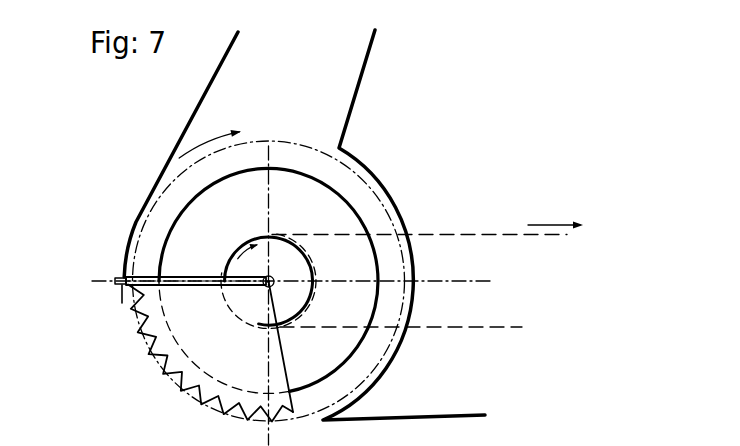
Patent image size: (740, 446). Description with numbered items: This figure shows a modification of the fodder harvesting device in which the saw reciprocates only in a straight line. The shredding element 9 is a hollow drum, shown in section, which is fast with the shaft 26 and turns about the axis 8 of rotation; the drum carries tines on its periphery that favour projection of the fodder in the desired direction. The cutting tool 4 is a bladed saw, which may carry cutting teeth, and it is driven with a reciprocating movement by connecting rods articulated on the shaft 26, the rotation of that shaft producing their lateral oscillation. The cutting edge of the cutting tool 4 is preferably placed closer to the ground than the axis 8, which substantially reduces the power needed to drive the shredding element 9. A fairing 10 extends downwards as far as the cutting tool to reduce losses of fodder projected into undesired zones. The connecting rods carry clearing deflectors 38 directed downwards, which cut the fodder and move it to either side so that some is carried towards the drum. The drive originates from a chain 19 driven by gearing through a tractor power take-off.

The fairing 10 is at (137, 226).
The shredding element 9 is at (358, 215).
The shaft 26 is at (263, 278).
The axis of rotation 8 is at (263, 276).
The cutting tool 4 is at (122, 291).
The clearing deflectors 38 is at (193, 338).
The chain 19 is at (430, 235).